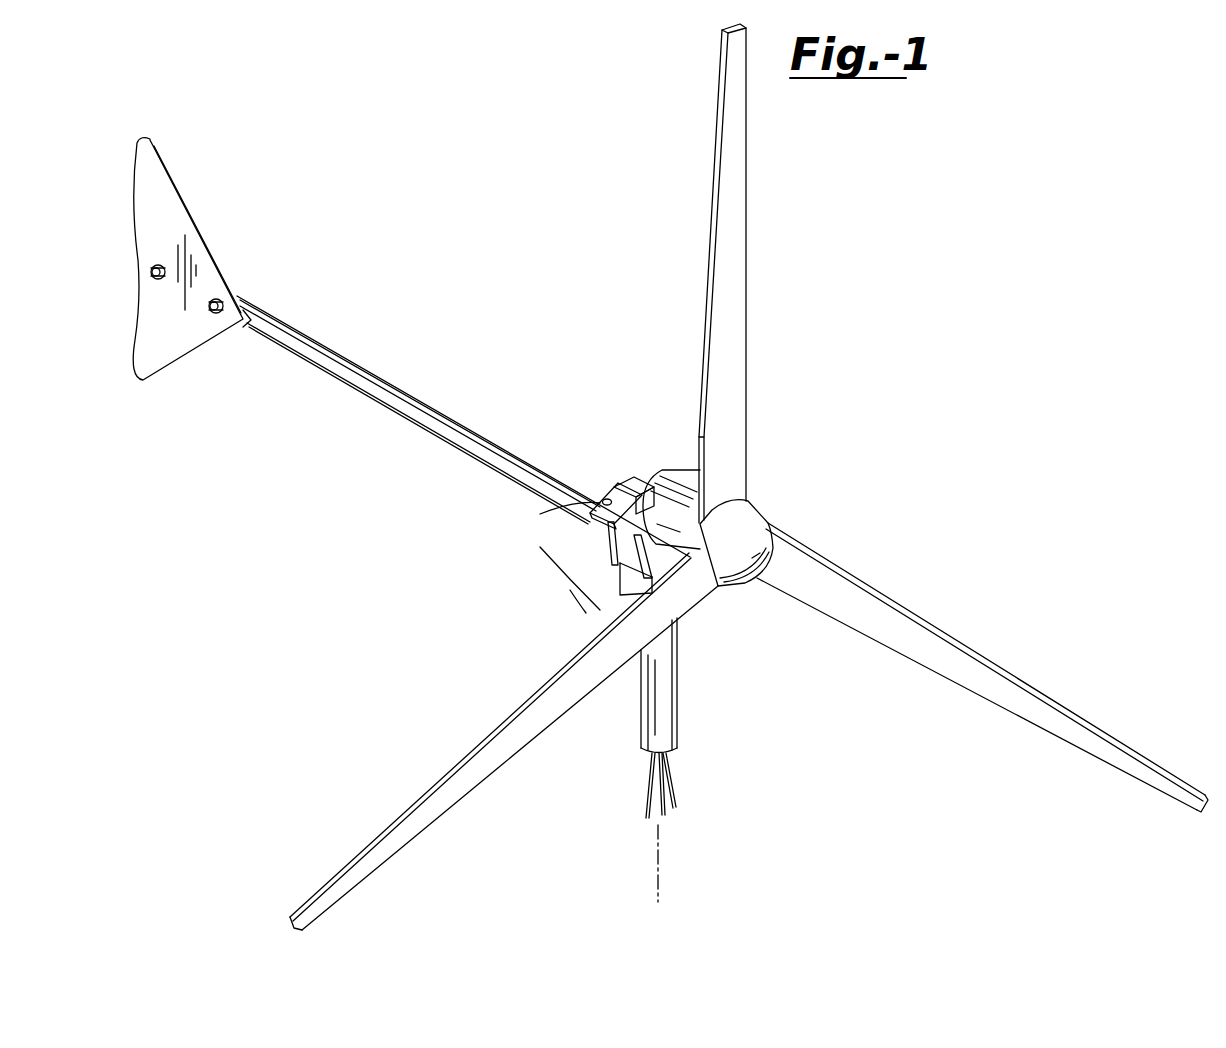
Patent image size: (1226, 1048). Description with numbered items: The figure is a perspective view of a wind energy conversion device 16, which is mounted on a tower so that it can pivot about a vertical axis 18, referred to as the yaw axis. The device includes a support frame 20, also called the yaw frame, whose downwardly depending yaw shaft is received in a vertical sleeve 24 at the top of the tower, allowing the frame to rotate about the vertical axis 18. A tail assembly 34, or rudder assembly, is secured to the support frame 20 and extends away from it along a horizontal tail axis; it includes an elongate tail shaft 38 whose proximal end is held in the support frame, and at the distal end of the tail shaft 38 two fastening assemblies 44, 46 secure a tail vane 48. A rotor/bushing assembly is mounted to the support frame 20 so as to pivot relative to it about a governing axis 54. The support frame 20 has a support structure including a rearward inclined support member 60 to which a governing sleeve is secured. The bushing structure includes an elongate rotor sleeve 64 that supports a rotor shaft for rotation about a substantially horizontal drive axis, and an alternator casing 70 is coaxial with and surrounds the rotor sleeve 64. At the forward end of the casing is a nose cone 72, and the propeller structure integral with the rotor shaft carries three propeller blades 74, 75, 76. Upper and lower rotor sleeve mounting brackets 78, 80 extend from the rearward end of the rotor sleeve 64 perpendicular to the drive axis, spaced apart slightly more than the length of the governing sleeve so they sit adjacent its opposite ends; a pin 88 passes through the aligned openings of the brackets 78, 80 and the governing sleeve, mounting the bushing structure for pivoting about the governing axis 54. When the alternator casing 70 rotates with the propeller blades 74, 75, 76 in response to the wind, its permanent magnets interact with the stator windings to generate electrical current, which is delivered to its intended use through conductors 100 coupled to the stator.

The wind energy conversion device 16 is at (797, 425).
The vertical axis 18 is at (665, 885).
The support frame 20 is at (622, 590).
The vertical sleeve 24 is at (677, 692).
The tail assembly 34 is at (435, 400).
The tail shaft 38 is at (352, 355).
The fastening assembly 44 is at (152, 275).
The fastening assembly 46 is at (213, 313).
The tail vane 48 is at (205, 232).
The governing axis 54 is at (604, 495).
The rearward inclined support member 60 is at (610, 566).
The rotor sleeve 64 is at (645, 488).
The alternator casing 70 is at (658, 490).
The nose cone 72 is at (770, 508).
The propeller blade 74 is at (748, 305).
The propeller blade 75 is at (910, 598).
The propeller blade 76 is at (510, 708).
The upper rotor sleeve mounting bracket 78 is at (580, 505).
The lower rotor sleeve mounting bracket 80 is at (600, 541).
The pin 88 is at (605, 492).
The conductors 100 is at (672, 775).